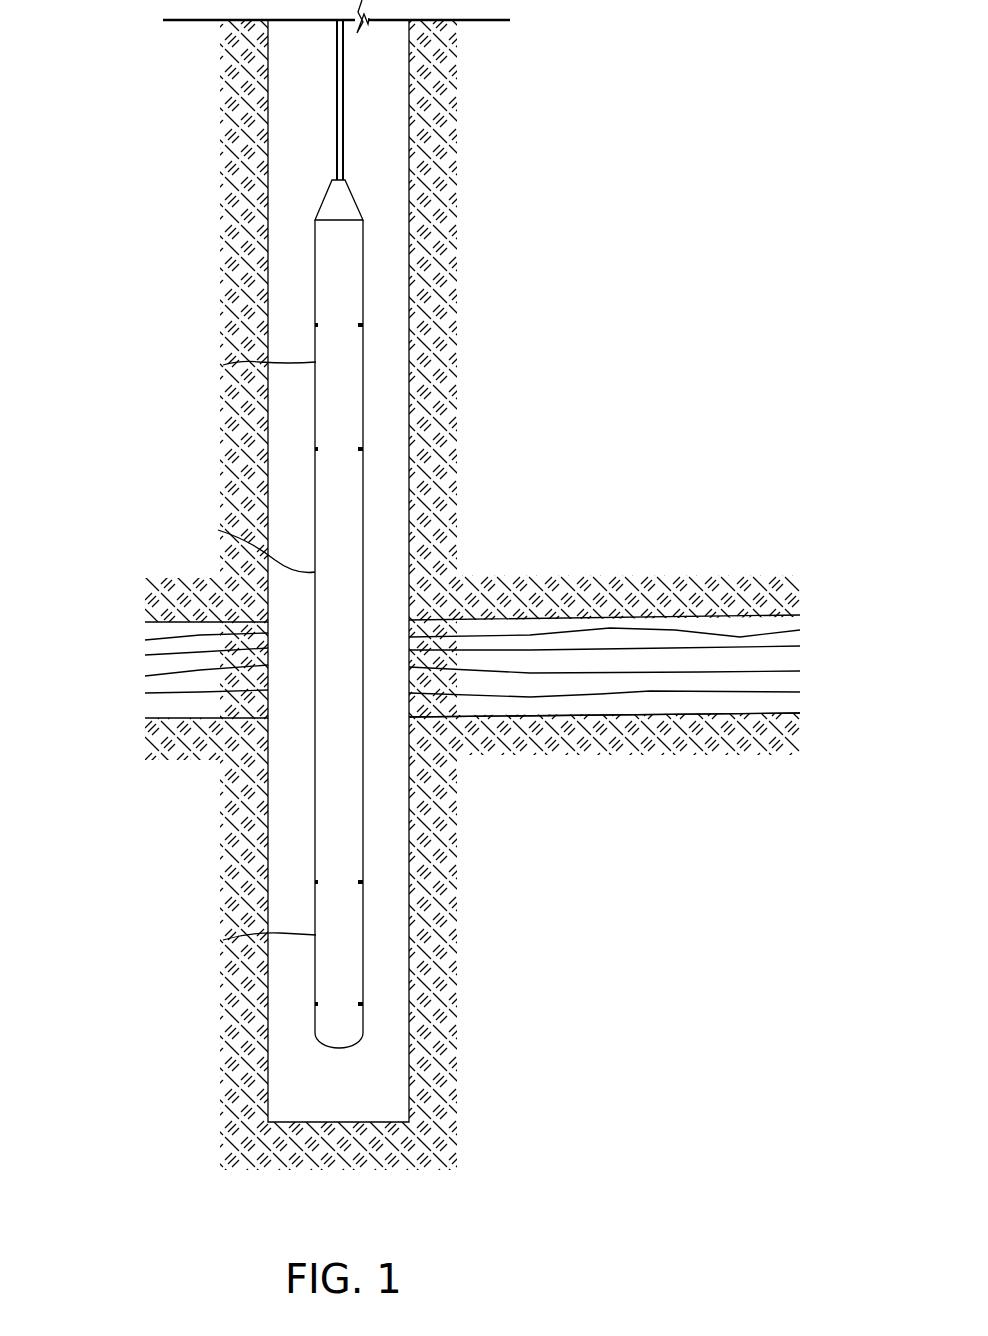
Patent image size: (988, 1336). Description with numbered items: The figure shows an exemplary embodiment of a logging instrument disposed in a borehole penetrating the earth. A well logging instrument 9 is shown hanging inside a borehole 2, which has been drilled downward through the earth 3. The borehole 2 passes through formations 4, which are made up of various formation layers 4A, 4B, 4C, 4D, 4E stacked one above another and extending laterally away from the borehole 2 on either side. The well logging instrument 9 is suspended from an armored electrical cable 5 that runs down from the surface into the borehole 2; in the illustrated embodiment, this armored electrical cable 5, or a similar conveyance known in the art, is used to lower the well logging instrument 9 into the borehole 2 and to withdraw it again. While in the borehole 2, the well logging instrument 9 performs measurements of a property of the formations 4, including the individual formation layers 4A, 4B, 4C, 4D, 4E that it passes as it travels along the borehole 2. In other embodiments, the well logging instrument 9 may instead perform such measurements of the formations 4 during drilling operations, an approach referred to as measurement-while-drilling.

The borehole 2 is at (390, 95).
The earth 3 is at (447, 953).
The formations 4 is at (147, 668).
The formation layer 4A is at (800, 622).
The formation layer 4B is at (800, 640).
The formation layer 4C is at (800, 658).
The formation layer 4D is at (800, 680).
The formation layer 4E is at (800, 700).
The armored electrical cable 5 is at (340, 103).
The well logging instrument 9 is at (373, 297).